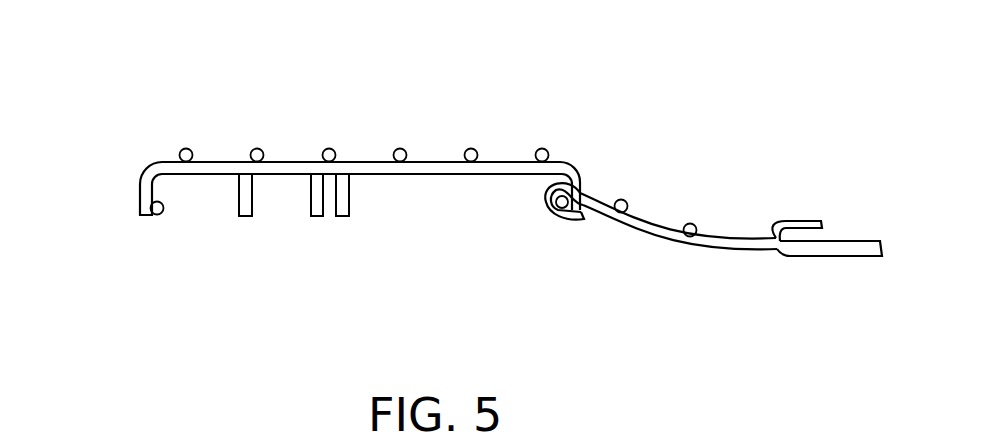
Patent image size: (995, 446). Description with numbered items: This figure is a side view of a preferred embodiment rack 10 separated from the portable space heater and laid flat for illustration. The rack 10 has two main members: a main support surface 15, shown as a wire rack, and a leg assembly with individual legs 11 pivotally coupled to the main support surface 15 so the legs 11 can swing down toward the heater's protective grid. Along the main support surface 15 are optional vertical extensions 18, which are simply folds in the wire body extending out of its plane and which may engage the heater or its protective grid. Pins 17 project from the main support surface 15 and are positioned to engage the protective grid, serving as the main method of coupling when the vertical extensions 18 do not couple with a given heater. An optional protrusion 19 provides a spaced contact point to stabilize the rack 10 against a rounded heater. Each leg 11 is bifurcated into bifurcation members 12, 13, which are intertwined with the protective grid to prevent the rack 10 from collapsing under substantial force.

The rack 10 is at (148, 98).
The legs 11 is at (667, 243).
The bifurcation member 12 is at (833, 256).
The bifurcation member 13 is at (800, 221).
The main support surface 15 is at (497, 166).
The pins 17 is at (252, 217).
The vertical extensions 18 is at (140, 190).
The protrusions 19 is at (140, 220).